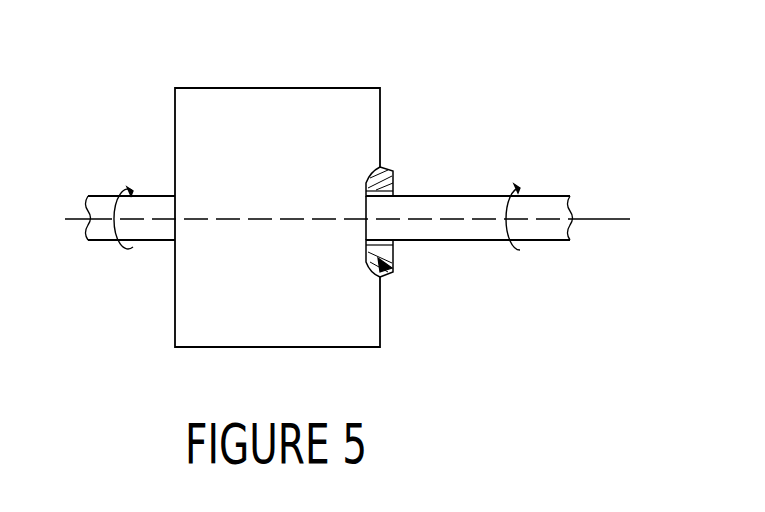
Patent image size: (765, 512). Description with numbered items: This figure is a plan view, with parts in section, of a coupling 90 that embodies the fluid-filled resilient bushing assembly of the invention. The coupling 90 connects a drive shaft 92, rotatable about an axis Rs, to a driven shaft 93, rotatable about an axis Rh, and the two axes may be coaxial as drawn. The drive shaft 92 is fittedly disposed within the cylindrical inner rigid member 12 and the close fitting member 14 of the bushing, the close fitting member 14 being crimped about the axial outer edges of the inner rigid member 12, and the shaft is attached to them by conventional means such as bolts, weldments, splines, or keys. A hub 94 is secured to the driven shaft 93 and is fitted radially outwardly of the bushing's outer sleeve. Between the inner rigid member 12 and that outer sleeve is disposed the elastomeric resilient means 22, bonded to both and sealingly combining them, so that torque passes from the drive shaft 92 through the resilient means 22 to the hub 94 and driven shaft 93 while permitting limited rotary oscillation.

The coupling 90 is at (278, 80).
The hub 94 is at (215, 122).
The driven shaft 93 is at (100, 205).
The drive shaft 92 is at (473, 208).
The inner rigid member 12 is at (394, 182).
The close fitting annular member 14 is at (393, 248).
The resilient means 22 is at (388, 268).